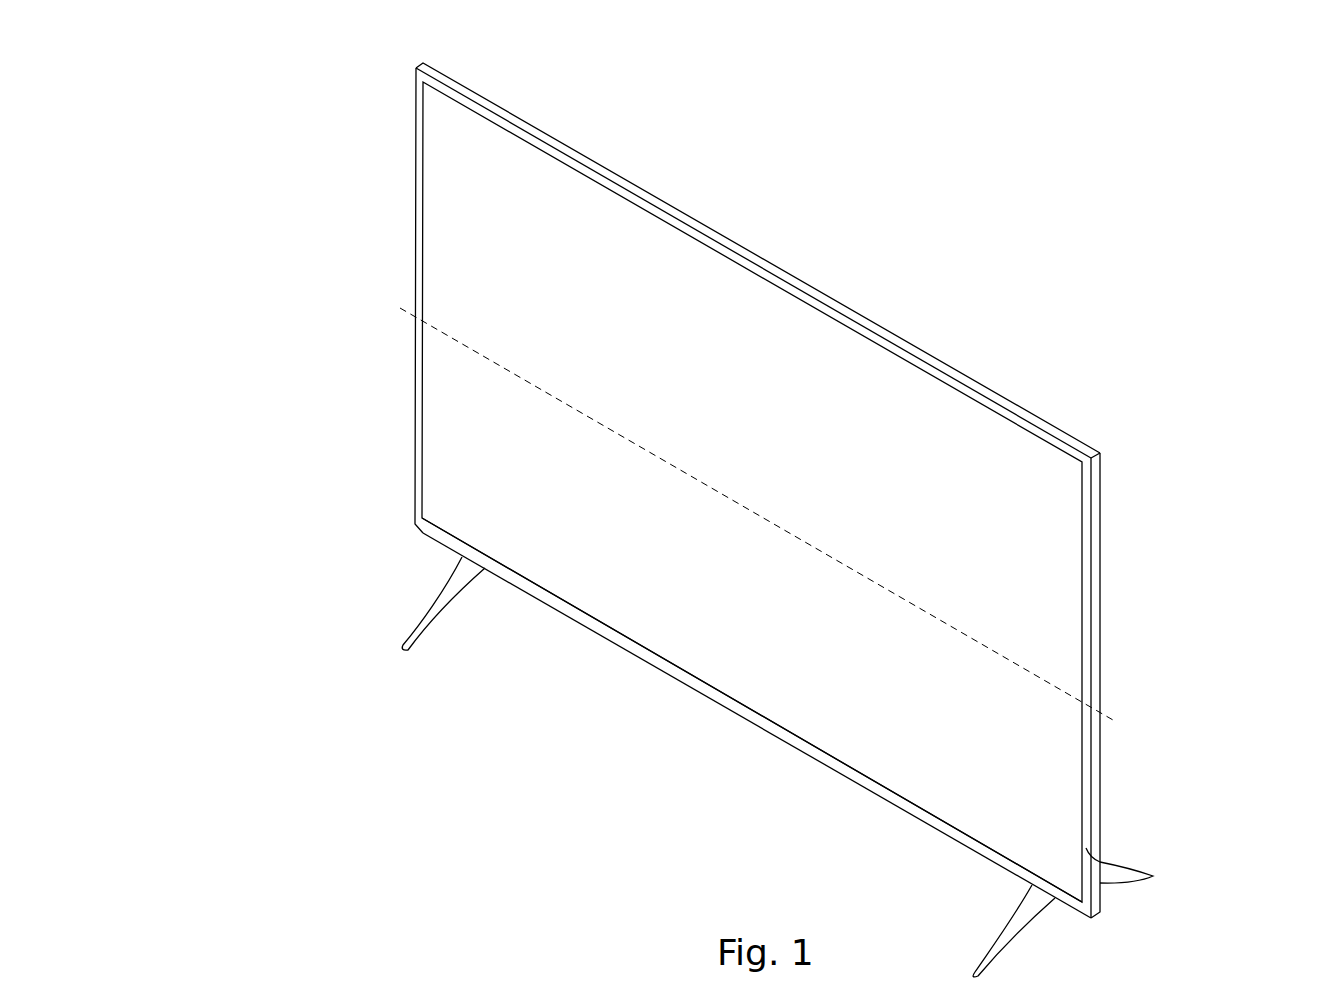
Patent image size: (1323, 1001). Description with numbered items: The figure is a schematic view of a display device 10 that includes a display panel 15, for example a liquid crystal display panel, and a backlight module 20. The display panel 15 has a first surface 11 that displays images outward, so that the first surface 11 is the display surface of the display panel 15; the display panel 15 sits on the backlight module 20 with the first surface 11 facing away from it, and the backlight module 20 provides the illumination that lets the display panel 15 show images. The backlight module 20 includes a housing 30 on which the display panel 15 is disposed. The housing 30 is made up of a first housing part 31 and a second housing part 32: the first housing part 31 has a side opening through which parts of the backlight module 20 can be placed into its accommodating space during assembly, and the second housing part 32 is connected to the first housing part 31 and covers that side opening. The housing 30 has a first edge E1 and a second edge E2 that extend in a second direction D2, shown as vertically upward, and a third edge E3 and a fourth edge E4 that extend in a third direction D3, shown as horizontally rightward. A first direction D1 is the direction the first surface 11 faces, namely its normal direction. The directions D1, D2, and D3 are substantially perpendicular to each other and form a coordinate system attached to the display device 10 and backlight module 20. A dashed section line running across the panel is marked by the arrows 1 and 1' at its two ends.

The display device 10 is at (1317, 94).
The first surface 11 is at (744, 650).
The display panel 15 is at (757, 296).
The backlight module 20 is at (863, 317).
The housing 30 is at (1240, 828).
The first housing part 31 is at (1100, 863).
The second housing part 32 is at (1077, 912).
The section line end 1 is at (748, 511).
The section line end 1' is at (1118, 758).
The first edge E1 is at (375, 238).
The second edge E2 is at (1151, 655).
The third edge E3 is at (548, 660).
The fourth edge E4 is at (838, 222).
The first direction D1 is at (249, 817).
The second direction D2 is at (249, 817).
The third direction D3 is at (249, 817).